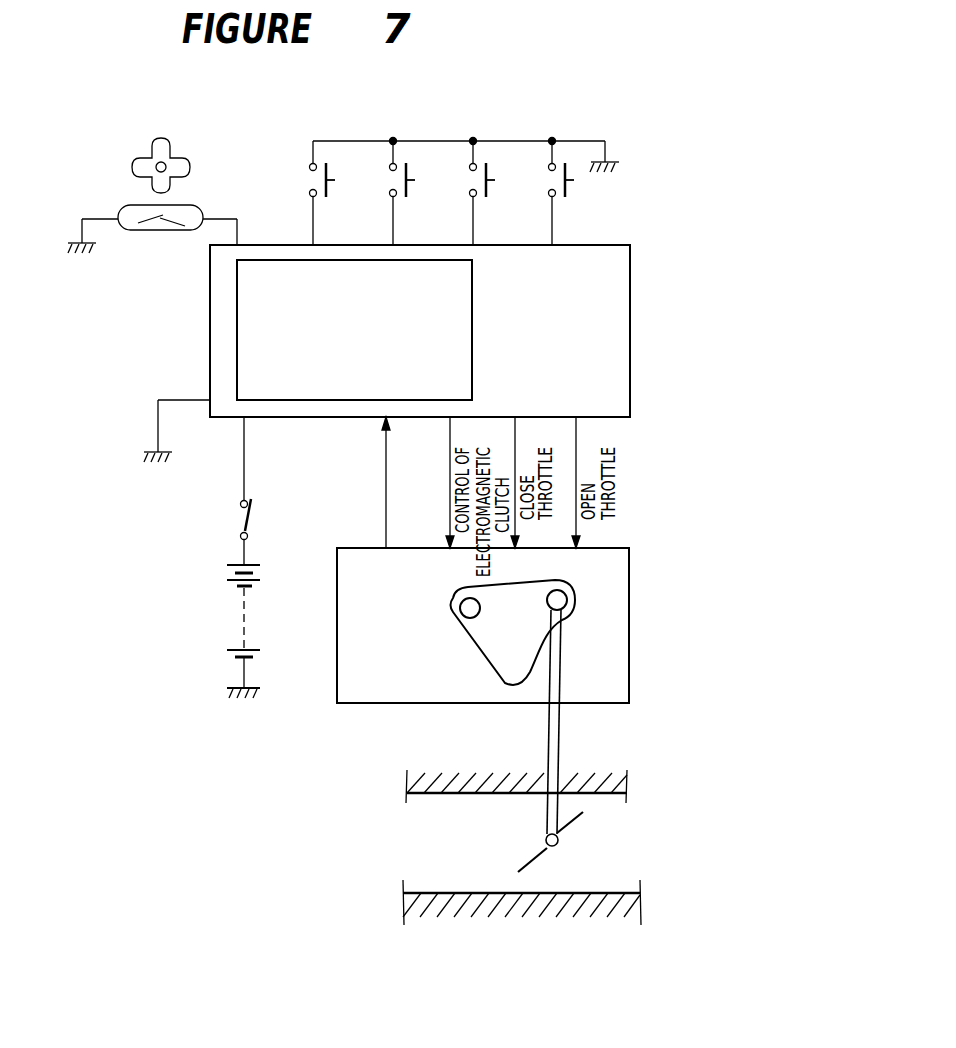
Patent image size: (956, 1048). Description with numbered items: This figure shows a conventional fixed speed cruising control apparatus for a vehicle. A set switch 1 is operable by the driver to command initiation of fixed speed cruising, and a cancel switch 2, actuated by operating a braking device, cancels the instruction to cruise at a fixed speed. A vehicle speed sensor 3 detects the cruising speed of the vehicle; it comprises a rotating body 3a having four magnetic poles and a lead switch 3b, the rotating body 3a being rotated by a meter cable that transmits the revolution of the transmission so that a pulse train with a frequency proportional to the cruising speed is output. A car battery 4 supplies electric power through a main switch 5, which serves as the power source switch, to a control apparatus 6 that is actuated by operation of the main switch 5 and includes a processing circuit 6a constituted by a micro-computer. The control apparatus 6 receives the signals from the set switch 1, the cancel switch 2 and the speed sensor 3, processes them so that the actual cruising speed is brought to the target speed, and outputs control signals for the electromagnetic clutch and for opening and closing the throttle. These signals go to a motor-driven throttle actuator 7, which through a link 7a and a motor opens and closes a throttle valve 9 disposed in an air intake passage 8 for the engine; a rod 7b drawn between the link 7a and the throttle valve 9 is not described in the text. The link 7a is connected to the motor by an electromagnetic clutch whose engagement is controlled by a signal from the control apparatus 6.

The set switch 1 is at (577, 155).
The cancel switch 2 is at (350, 158).
The vehicle speed sensor 3 is at (152, 197).
The rotating body 3a is at (167, 150).
The lead switch 3b is at (156, 232).
The car battery 4 is at (233, 595).
The main switch 5 is at (257, 513).
The control apparatus 6 is at (411, 353).
The processing circuit 6a is at (226, 340).
The throttle actuator 7 is at (503, 697).
The link 7a is at (503, 665).
The rod 7b is at (562, 727).
The air intake passage 8 is at (457, 870).
The throttle valve 9 is at (570, 825).